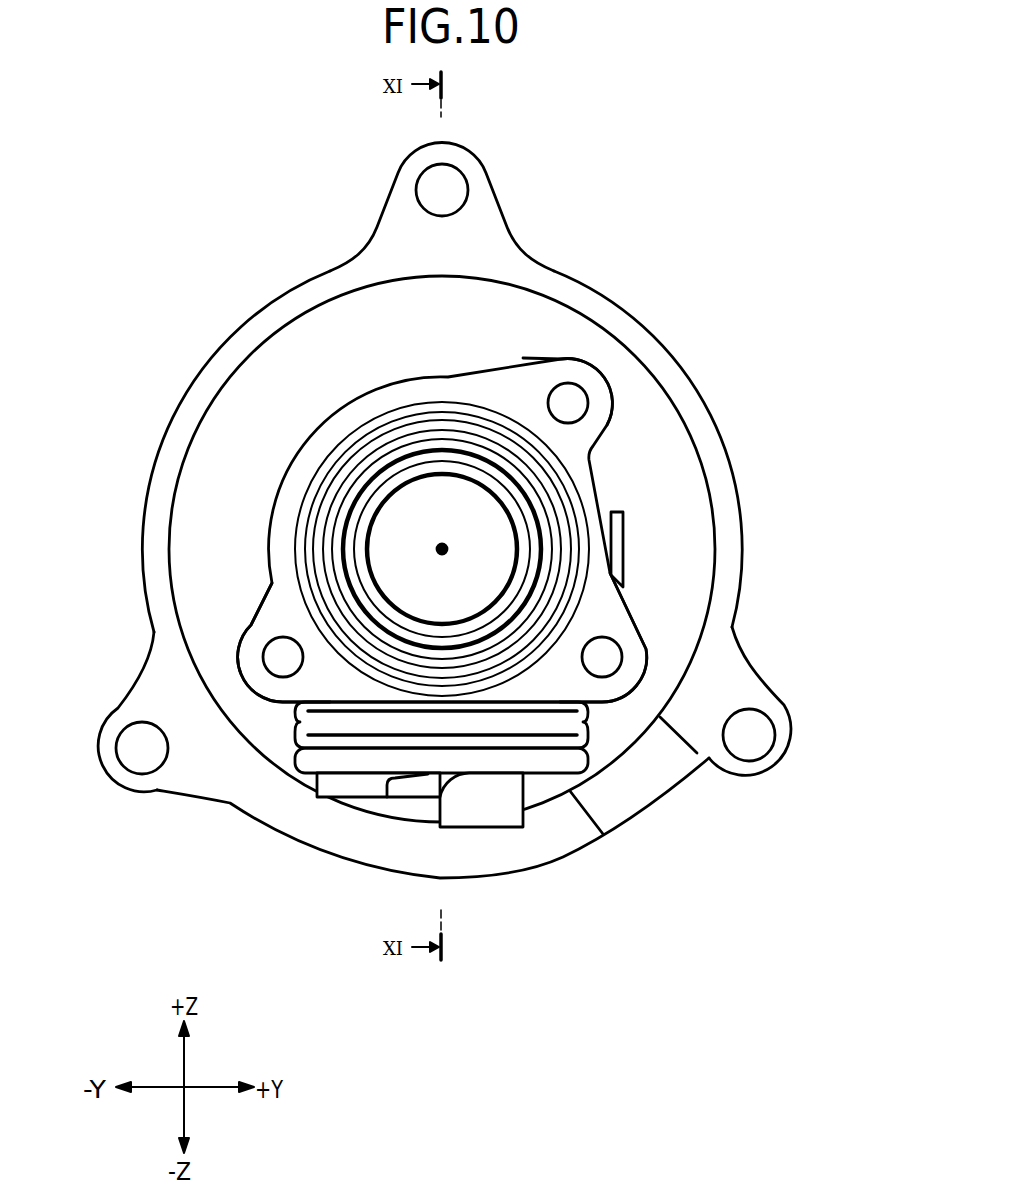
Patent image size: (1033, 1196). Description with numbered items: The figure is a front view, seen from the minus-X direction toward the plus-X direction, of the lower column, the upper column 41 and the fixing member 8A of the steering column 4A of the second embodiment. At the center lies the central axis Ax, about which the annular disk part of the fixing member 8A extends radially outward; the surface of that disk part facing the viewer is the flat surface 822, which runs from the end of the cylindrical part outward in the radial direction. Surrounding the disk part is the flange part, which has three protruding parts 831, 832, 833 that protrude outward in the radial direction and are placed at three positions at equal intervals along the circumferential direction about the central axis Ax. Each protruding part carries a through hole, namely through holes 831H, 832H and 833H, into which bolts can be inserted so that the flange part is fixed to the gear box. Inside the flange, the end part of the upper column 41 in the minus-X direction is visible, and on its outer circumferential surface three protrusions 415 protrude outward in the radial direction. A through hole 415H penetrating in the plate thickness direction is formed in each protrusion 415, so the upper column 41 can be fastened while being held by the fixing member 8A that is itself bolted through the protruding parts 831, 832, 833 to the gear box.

The steering column 4A is at (667, 218).
The fixing member 8A is at (570, 271).
The flat surface 822 is at (297, 360).
The upper column 41 is at (604, 479).
The protrusion 415 is at (590, 378).
The through hole 415H is at (579, 404).
The protruding part 831 is at (480, 233).
The through hole 831H is at (453, 178).
The protruding part 832 is at (138, 702).
The through hole 832H is at (138, 758).
The protruding part 833 is at (764, 700).
The through hole 833H is at (758, 748).
The central axis Ax is at (441, 546).